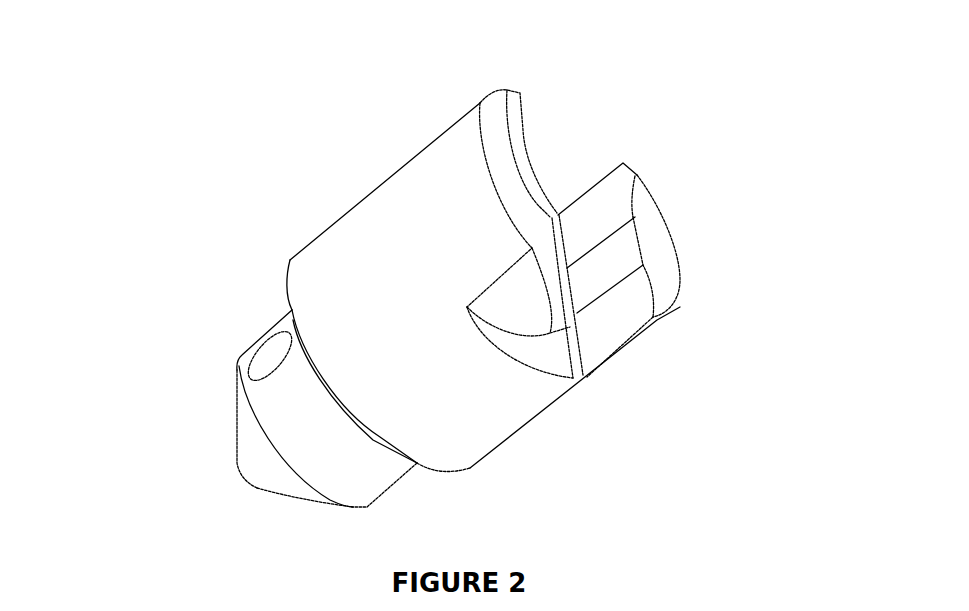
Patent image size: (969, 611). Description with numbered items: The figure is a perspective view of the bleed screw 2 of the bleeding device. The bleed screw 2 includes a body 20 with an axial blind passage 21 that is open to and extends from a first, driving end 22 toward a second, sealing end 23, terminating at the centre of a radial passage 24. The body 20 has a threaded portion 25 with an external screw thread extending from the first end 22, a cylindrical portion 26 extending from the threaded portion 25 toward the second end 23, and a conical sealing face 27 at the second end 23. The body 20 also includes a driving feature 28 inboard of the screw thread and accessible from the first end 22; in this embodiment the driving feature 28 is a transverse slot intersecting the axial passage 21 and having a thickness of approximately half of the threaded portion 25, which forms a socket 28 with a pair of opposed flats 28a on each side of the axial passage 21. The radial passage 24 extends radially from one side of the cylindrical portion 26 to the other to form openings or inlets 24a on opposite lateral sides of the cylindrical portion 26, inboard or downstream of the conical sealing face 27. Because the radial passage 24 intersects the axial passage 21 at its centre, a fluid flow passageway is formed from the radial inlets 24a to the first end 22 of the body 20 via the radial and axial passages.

The bleed screw 2 is at (424, 309).
The body 20 is at (480, 473).
The axial blind passage 21 is at (622, 245).
The first, driving end 22 is at (542, 270).
The second, sealing end 23 is at (233, 449).
The radial passage 24 is at (174, 350).
The inlets 24a is at (267, 357).
The threaded portion 25 is at (407, 259).
The cylindrical portion 26 is at (343, 468).
The conical sealing face 27 is at (283, 480).
The driving feature 28 is at (569, 160).
The opposed flats 28a is at (588, 221).